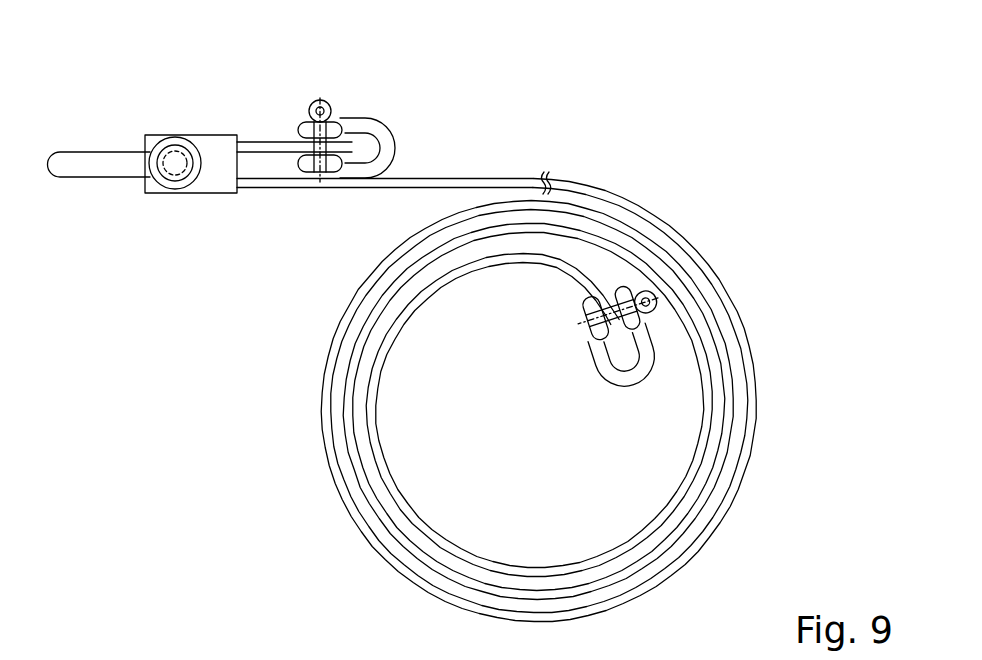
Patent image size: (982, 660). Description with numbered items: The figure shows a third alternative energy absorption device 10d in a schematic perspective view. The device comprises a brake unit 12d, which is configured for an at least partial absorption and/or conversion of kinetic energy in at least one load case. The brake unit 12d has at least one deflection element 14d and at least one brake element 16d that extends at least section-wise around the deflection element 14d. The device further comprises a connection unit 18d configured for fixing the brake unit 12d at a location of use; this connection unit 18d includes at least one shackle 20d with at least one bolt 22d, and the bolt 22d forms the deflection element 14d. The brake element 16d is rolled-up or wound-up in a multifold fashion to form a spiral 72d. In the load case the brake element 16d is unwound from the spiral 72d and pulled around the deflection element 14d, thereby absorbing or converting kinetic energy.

The third alternative energy absorption device 10d is at (436, 324).
The brake unit 12d is at (231, 125).
The deflection element 14d is at (195, 211).
The bolt 22d is at (190, 193).
The brake element 16d is at (490, 178).
The connection unit 18d is at (91, 189).
The shackle 20d is at (74, 195).
The spiral 72d is at (717, 248).